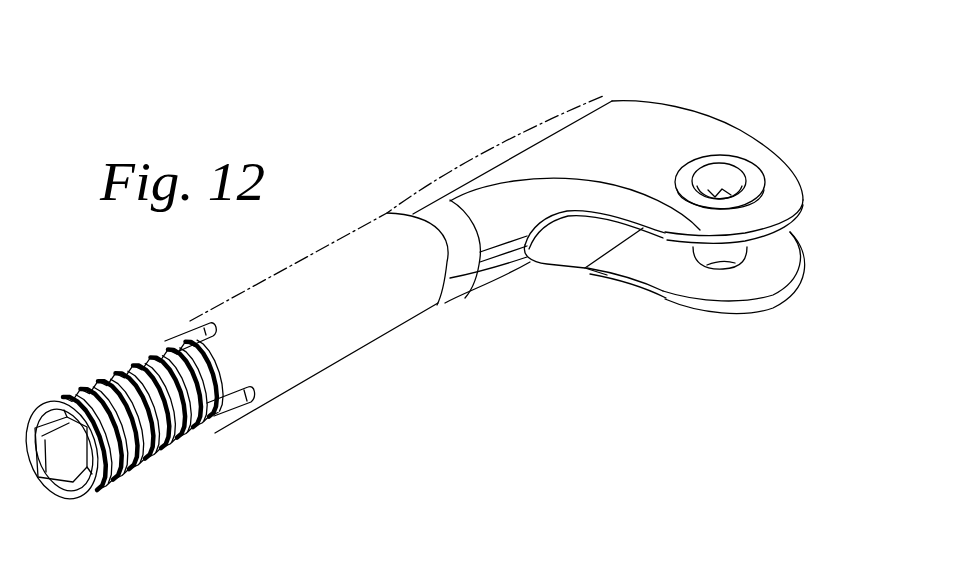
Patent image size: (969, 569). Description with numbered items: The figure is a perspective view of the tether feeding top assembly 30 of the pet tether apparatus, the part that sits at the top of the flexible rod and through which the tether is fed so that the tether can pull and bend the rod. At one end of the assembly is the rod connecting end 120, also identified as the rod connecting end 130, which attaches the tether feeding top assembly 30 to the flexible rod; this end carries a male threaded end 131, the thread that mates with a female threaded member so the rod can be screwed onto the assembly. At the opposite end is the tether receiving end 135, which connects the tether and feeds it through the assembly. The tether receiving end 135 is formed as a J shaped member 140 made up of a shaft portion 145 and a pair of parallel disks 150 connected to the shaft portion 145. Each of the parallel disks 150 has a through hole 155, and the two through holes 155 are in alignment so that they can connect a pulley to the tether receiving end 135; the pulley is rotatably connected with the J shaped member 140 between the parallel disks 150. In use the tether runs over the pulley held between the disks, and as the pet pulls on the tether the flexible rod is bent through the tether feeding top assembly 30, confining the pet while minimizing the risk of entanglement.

The tether feeding top assembly 30 is at (610, 408).
The rod connecting end 120 is at (318, 374).
The rod connecting end 130 is at (188, 447).
The male threaded end 131 is at (235, 429).
The tether receiving end 135 is at (652, 100).
The J shaped member 140 is at (510, 267).
The shaft portion 145 is at (453, 298).
The parallel disks 150 is at (803, 198).
The through hole 155 is at (720, 172).